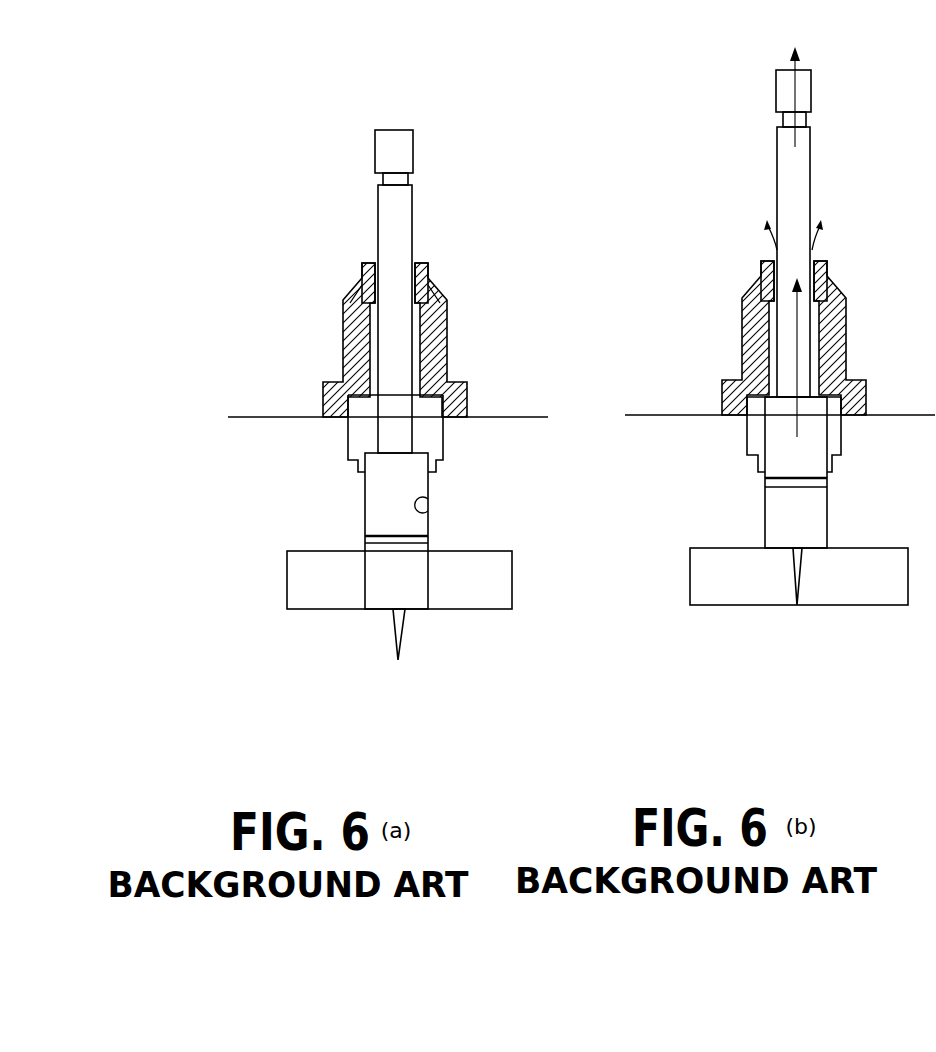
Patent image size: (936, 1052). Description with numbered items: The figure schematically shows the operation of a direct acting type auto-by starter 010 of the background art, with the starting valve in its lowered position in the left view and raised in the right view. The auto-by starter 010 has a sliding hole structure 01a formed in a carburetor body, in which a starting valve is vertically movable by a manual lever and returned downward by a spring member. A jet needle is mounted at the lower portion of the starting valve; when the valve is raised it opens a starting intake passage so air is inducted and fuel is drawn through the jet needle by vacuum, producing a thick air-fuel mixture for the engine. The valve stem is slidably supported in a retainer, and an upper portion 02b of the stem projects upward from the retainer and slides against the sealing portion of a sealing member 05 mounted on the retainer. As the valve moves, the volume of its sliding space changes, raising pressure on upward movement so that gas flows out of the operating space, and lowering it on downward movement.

The auto-by starter 010 is at (182, 292).
The sliding hole structure 01a is at (428, 513).
The upper portion of the stem 02b is at (398, 230).
The sealing member 05 is at (345, 300).